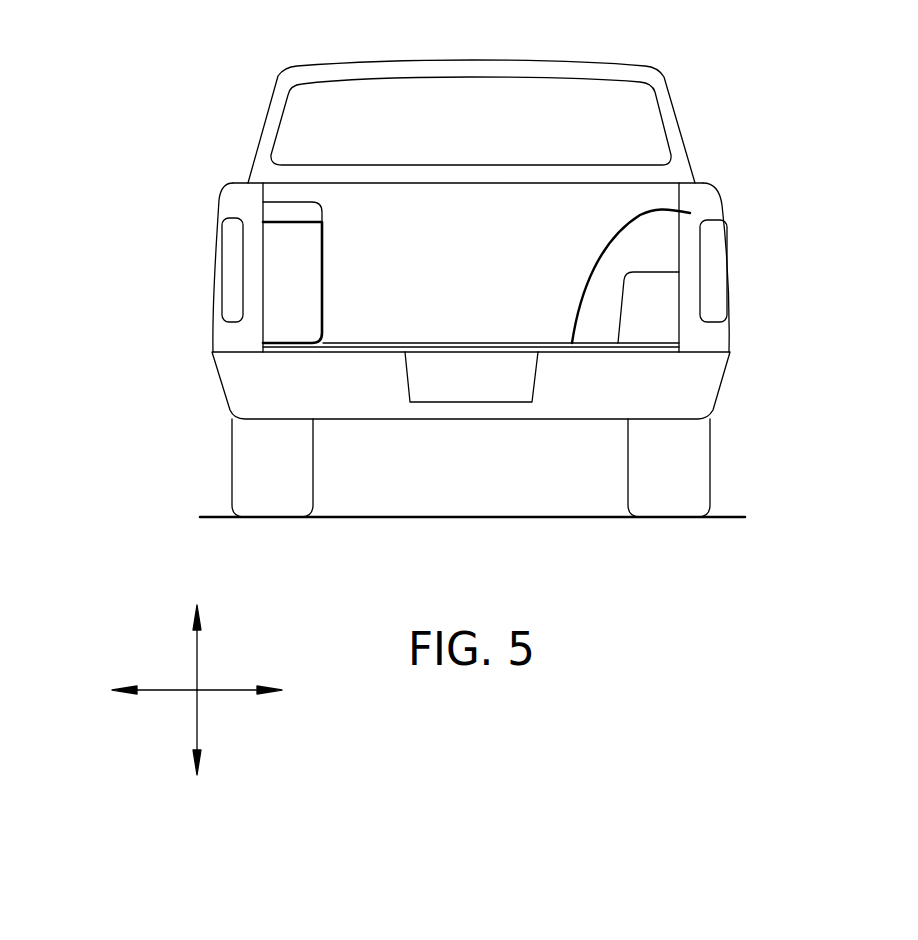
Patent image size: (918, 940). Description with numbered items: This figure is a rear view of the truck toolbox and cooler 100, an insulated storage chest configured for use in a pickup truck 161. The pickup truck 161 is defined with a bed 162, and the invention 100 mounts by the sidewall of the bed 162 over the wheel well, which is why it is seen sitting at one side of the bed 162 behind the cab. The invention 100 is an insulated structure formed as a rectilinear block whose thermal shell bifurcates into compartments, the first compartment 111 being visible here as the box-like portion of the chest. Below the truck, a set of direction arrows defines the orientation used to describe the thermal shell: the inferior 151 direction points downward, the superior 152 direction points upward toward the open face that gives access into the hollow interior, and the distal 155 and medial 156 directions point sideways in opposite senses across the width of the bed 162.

The truck toolbox and cooler 100 is at (323, 247).
The first compartment 111 is at (300, 288).
The pickup truck 161 is at (673, 118).
The bed 162 is at (690, 213).
The inferior direction 151 is at (199, 755).
The superior direction 152 is at (197, 626).
The distal direction 155 is at (119, 688).
The medial direction 156 is at (272, 688).